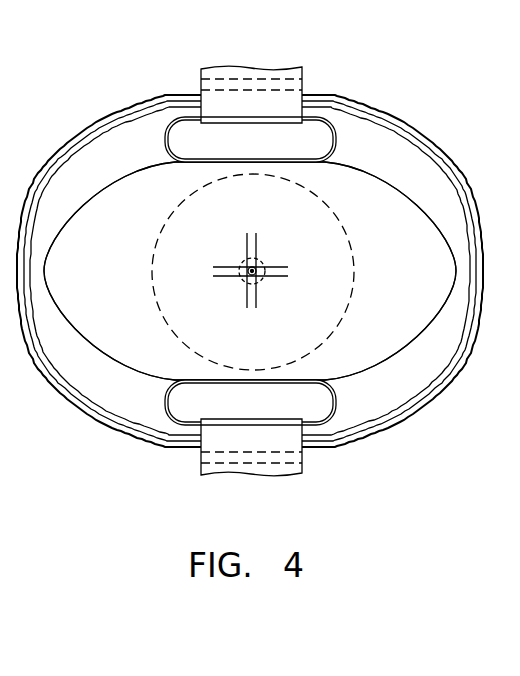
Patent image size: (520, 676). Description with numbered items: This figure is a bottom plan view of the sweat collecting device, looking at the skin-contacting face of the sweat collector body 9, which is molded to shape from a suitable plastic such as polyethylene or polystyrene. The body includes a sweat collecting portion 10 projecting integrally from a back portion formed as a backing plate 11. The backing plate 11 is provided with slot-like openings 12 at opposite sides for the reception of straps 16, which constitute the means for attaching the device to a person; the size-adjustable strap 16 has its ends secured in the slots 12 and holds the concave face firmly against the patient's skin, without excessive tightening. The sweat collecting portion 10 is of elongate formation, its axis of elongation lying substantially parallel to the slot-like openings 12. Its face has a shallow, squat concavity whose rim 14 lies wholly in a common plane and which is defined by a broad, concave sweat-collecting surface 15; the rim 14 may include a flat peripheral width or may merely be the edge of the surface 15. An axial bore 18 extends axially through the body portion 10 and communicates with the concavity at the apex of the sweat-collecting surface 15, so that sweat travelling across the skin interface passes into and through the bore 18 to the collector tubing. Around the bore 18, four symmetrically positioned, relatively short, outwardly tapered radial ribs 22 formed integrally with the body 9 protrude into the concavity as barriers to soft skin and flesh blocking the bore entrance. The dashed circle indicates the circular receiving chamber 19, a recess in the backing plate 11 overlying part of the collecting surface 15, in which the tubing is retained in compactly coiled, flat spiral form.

The sweat collector body 9 is at (366, 84).
The sweat collecting portion 10 is at (393, 176).
The backing plate 11 is at (372, 132).
The slot-like openings 12 is at (188, 124).
The rim 14 is at (92, 198).
The concave sweat-collecting surface 15 is at (398, 328).
The strap 16 is at (248, 66).
The axial bore 18 is at (251, 285).
The circular receiving chamber 19 is at (152, 267).
The radial ribs 22 is at (280, 270).